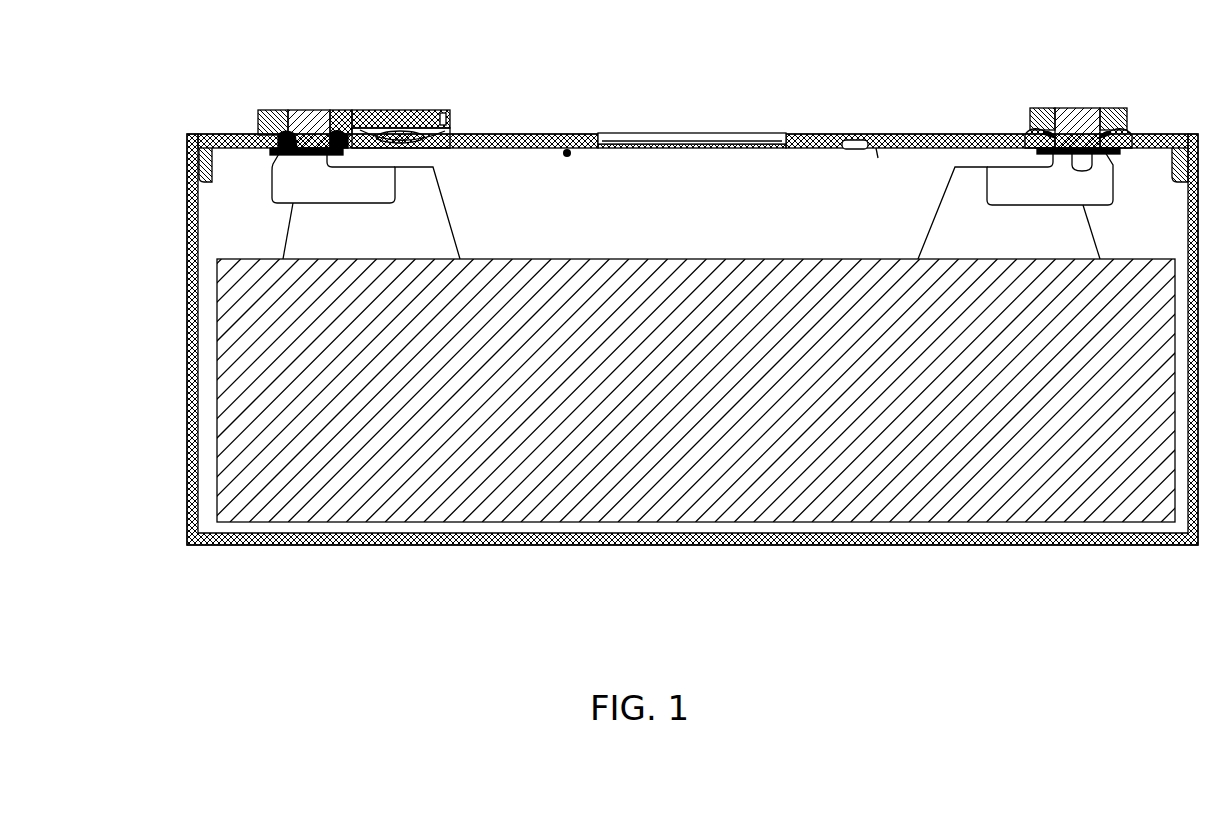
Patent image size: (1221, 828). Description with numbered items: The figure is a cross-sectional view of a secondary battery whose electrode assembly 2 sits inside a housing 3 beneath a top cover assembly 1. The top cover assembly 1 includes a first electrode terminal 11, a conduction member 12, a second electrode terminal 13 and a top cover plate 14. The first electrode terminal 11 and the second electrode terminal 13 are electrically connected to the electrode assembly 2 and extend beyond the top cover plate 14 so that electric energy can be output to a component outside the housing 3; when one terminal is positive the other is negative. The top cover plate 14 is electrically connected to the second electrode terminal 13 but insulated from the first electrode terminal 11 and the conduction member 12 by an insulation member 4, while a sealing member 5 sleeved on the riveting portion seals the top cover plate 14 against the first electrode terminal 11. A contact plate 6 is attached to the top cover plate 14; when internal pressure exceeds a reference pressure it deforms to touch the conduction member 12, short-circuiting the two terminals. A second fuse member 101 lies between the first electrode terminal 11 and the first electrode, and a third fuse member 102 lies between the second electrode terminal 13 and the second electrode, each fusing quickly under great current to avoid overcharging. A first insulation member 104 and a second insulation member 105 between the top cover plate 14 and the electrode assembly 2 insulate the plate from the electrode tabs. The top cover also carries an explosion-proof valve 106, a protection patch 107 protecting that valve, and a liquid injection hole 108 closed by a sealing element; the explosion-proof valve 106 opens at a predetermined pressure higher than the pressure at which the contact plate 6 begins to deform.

The top cover assembly 1 is at (542, 106).
The electrode assembly 2 is at (678, 458).
The housing 3 is at (400, 546).
The insulation member 4 is at (258, 124).
The sealing member 5 is at (283, 124).
The contact plate 6 is at (413, 112).
The first electrode terminal 11 is at (312, 122).
The conduction member 12 is at (352, 117).
The second electrode terminal 13 is at (1080, 120).
The top cover plate 14 is at (508, 138).
The second fuse member 101 is at (307, 165).
The third fuse member 102 is at (1105, 176).
The first insulation member 104 is at (194, 130).
The second insulation member 105 is at (950, 134).
The explosion-proof valve 106 is at (700, 137).
The protection patch 107 is at (652, 140).
The liquid injection hole 108 is at (858, 140).